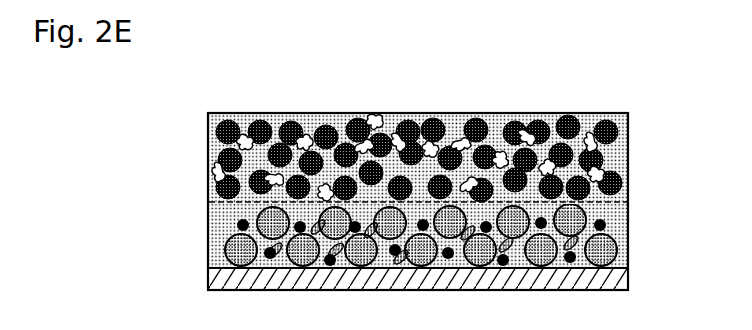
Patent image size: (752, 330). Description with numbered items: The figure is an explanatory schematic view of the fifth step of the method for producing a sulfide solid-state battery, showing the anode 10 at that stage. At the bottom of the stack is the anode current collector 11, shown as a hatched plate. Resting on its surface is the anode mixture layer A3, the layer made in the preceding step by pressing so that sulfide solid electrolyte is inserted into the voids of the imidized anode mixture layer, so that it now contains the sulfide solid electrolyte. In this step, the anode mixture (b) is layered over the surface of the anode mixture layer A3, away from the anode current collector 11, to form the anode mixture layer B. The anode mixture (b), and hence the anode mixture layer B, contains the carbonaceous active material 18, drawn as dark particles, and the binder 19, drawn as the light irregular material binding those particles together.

The anode 10 is at (430, 64).
The carbonaceous active material 18 is at (209, 133).
The binder 19 is at (213, 178).
The anode current collector 11 is at (622, 283).
The anode mixture layer B is at (633, 112).
The anode mixture layer A3 is at (632, 207).
The anode mixture b is at (160, 121).